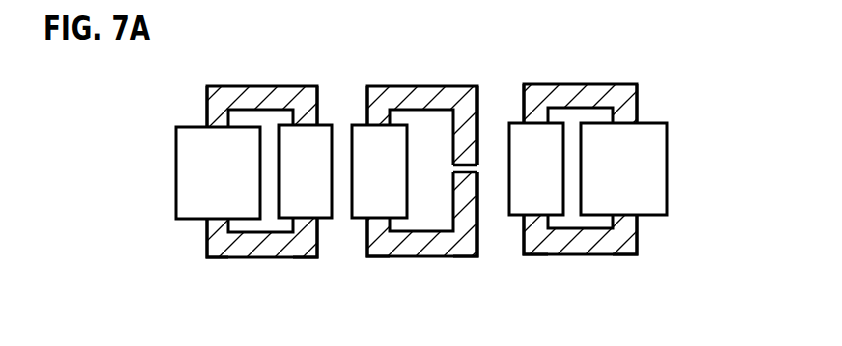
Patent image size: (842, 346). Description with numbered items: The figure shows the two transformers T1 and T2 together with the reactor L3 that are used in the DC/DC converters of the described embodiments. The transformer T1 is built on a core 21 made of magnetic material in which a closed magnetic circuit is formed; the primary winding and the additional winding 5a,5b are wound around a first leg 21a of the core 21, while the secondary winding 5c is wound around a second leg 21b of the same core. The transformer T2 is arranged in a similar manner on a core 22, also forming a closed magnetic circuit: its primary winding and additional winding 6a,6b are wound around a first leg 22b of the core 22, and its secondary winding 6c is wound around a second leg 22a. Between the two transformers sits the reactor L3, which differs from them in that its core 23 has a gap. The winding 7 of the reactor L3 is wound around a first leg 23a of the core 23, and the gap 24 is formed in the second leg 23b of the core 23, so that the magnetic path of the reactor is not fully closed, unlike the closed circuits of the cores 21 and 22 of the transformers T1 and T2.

The transformer T1 is at (234, 182).
The transformer T2 is at (633, 166).
The reactor L3 is at (424, 170).
The core 21 is at (258, 243).
The first leg 21a is at (207, 118).
The second leg 21b is at (317, 118).
The primary winding and additional winding 5a,5b is at (192, 220).
The secondary winding 5c is at (326, 220).
The core 23 is at (415, 243).
The first leg 23a is at (360, 117).
The second leg 23b is at (481, 118).
The gap 24 is at (477, 172).
The winding 7 is at (407, 167).
The core 22 is at (575, 243).
The second leg 22a is at (515, 118).
The first leg 22b is at (637, 115).
The secondary winding 6c is at (513, 217).
The primary winding and additional winding 6a,6b is at (667, 165).